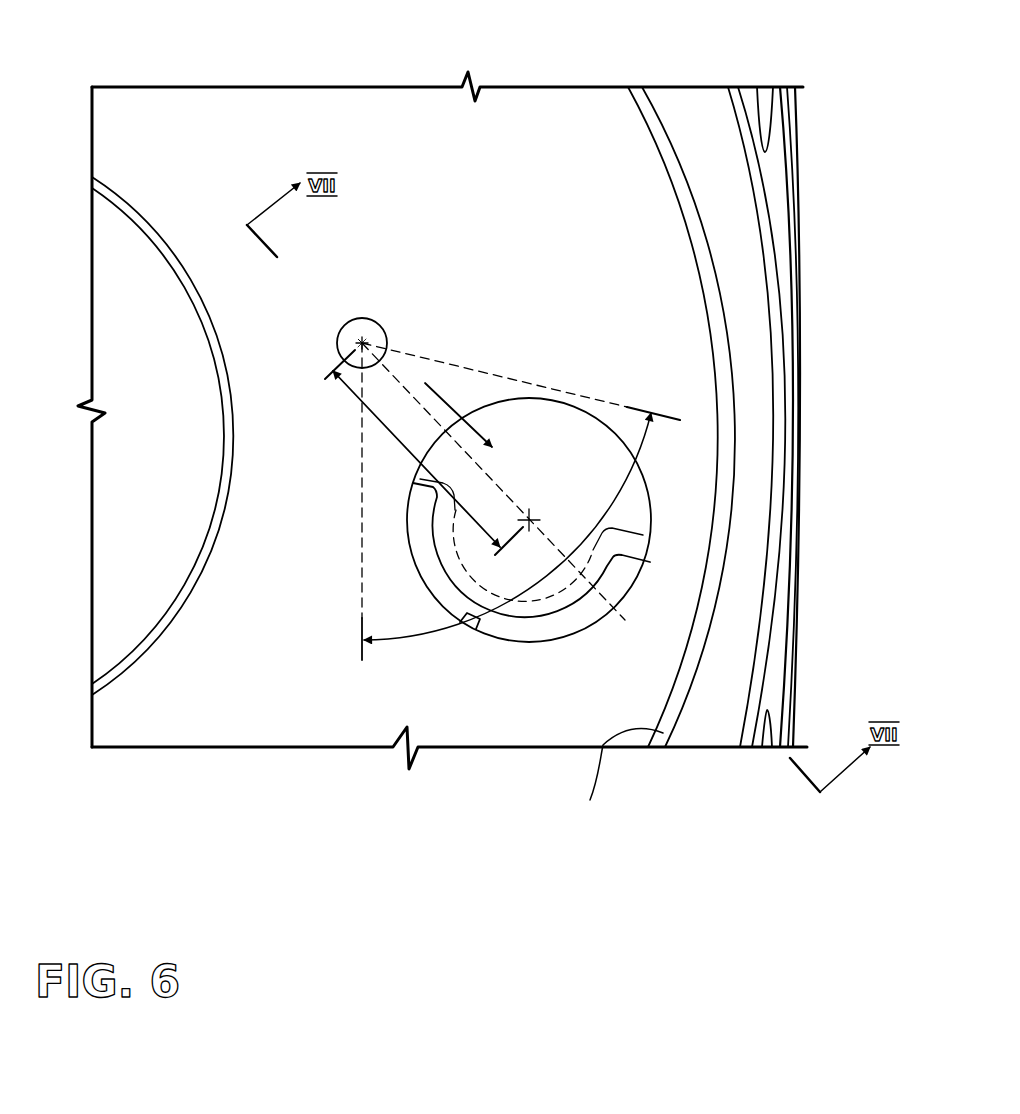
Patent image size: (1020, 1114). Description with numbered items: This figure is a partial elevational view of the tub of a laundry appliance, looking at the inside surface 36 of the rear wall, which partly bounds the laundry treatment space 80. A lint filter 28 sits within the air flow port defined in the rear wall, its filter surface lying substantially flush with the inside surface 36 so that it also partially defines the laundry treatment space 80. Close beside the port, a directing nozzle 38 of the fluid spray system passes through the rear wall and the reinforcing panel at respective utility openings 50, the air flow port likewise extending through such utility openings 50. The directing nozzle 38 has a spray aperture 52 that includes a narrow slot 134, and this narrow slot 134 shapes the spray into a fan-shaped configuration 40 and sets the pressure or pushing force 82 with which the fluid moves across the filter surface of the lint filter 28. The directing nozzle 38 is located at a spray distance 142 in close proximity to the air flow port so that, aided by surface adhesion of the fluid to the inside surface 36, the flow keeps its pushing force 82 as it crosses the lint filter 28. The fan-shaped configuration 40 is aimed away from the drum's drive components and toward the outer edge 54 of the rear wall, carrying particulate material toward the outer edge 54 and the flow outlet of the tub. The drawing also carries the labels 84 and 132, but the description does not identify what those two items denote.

The lint filter 28 is at (658, 557).
The inside surface 36 is at (586, 241).
The directing nozzle 38 is at (334, 333).
The fan-shaped configuration 40 is at (357, 548).
The utility openings 50 is at (653, 517).
The spray aperture 52 is at (364, 318).
The outer edge 54 is at (617, 778).
The laundry treatment space 80 is at (202, 678).
The pushing force 82 is at (455, 408).
The angle 84 is at (420, 645).
The direction arrow 132 is at (370, 366).
The narrow slot 134 is at (387, 348).
The spray distance 142 is at (333, 386).